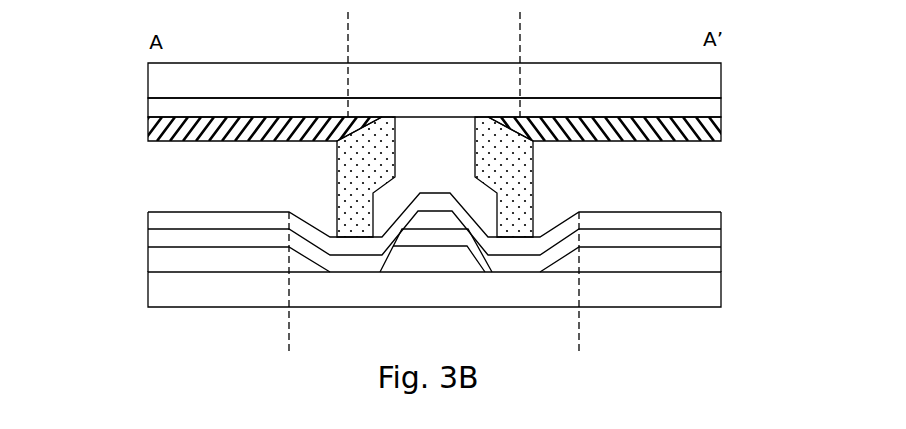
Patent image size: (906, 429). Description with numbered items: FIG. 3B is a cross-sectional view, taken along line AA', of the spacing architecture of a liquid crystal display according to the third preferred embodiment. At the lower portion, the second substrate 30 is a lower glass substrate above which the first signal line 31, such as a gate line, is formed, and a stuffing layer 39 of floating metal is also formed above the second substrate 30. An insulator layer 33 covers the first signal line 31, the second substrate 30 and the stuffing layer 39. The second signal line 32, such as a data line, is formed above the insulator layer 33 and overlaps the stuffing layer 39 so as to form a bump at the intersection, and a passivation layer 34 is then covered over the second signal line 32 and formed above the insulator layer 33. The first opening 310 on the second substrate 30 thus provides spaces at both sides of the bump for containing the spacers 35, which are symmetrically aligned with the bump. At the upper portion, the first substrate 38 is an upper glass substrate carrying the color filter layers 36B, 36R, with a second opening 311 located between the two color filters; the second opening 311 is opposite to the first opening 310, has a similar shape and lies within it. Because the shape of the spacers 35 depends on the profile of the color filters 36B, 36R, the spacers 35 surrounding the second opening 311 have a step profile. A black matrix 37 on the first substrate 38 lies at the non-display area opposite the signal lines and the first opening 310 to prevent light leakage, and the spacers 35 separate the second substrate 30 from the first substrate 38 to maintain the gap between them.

The second substrate 30 is at (178, 290).
The first signal line 31 is at (167, 263).
The second signal line 32 is at (437, 219).
The insulator layer 33 is at (160, 237).
The passivation layer 34 is at (160, 220).
The spacer 35 is at (485, 158).
The color filter layer 36B is at (150, 135).
The color filter layer 36R is at (722, 141).
The black matrix 37 is at (160, 107).
The first substrate 38 is at (160, 80).
The stuffing layer 39 is at (432, 263).
The first opening 310 is at (289, 332).
The second opening 311 is at (348, 27).